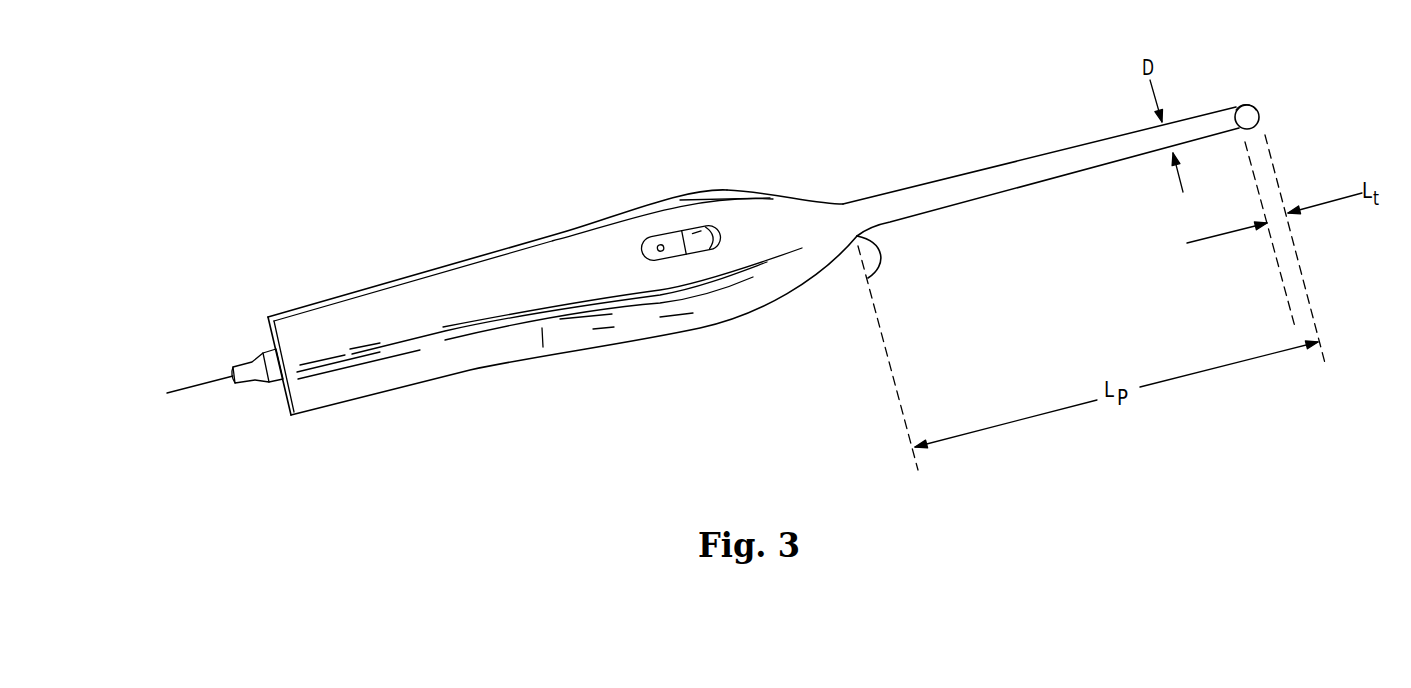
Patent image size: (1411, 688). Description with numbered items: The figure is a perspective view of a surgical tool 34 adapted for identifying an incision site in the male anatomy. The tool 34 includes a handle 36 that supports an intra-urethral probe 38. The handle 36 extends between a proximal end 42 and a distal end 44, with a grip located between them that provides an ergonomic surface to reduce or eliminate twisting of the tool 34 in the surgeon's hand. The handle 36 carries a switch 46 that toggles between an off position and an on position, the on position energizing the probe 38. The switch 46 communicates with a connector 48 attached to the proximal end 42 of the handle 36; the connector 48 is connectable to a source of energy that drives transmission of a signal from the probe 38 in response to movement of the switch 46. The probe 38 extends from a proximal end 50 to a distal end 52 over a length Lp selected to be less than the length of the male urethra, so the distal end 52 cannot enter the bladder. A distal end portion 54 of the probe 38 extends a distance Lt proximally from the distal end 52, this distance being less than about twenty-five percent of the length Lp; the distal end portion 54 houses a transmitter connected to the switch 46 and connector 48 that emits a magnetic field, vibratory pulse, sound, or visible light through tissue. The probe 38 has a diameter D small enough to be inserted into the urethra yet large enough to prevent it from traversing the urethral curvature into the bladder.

The surgical tool 34 is at (485, 130).
The handle 36 is at (475, 307).
The intra-urethral probe 38 is at (1068, 162).
The proximal end 42 is at (270, 331).
The distal end 44 is at (857, 236).
The switch 46 is at (670, 241).
The connector 48 is at (252, 381).
The proximal end 50 is at (868, 278).
The distal end 52 is at (1259, 112).
The distal end portion 54 is at (1258, 92).